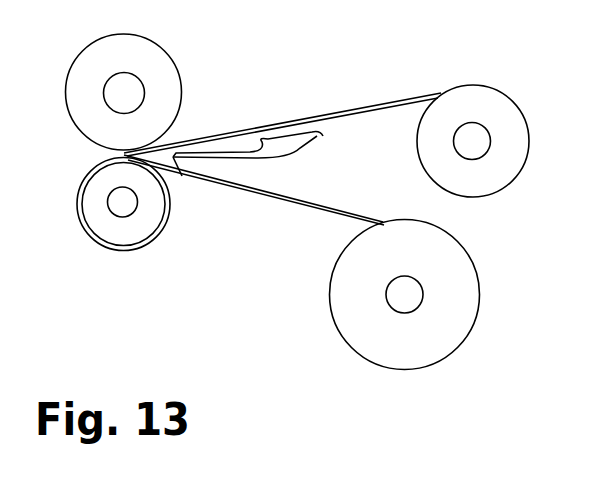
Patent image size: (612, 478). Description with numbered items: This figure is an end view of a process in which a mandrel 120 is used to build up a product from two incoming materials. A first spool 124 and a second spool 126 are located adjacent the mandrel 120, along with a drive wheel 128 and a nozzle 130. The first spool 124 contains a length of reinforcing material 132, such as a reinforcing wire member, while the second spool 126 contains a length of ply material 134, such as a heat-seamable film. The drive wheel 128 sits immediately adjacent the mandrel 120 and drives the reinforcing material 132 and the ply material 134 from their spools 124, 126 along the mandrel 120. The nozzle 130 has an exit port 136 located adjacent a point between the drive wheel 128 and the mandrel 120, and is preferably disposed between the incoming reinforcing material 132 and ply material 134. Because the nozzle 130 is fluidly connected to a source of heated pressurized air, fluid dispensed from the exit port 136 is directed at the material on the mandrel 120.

The mandrel 120 is at (98, 208).
The first spool 124 is at (420, 342).
The second spool 126 is at (510, 128).
The drive wheel 128 is at (153, 70).
The nozzle 130 is at (299, 146).
The reinforcing material 132 is at (341, 207).
The ply material 134 is at (383, 103).
The exit port 136 is at (182, 176).